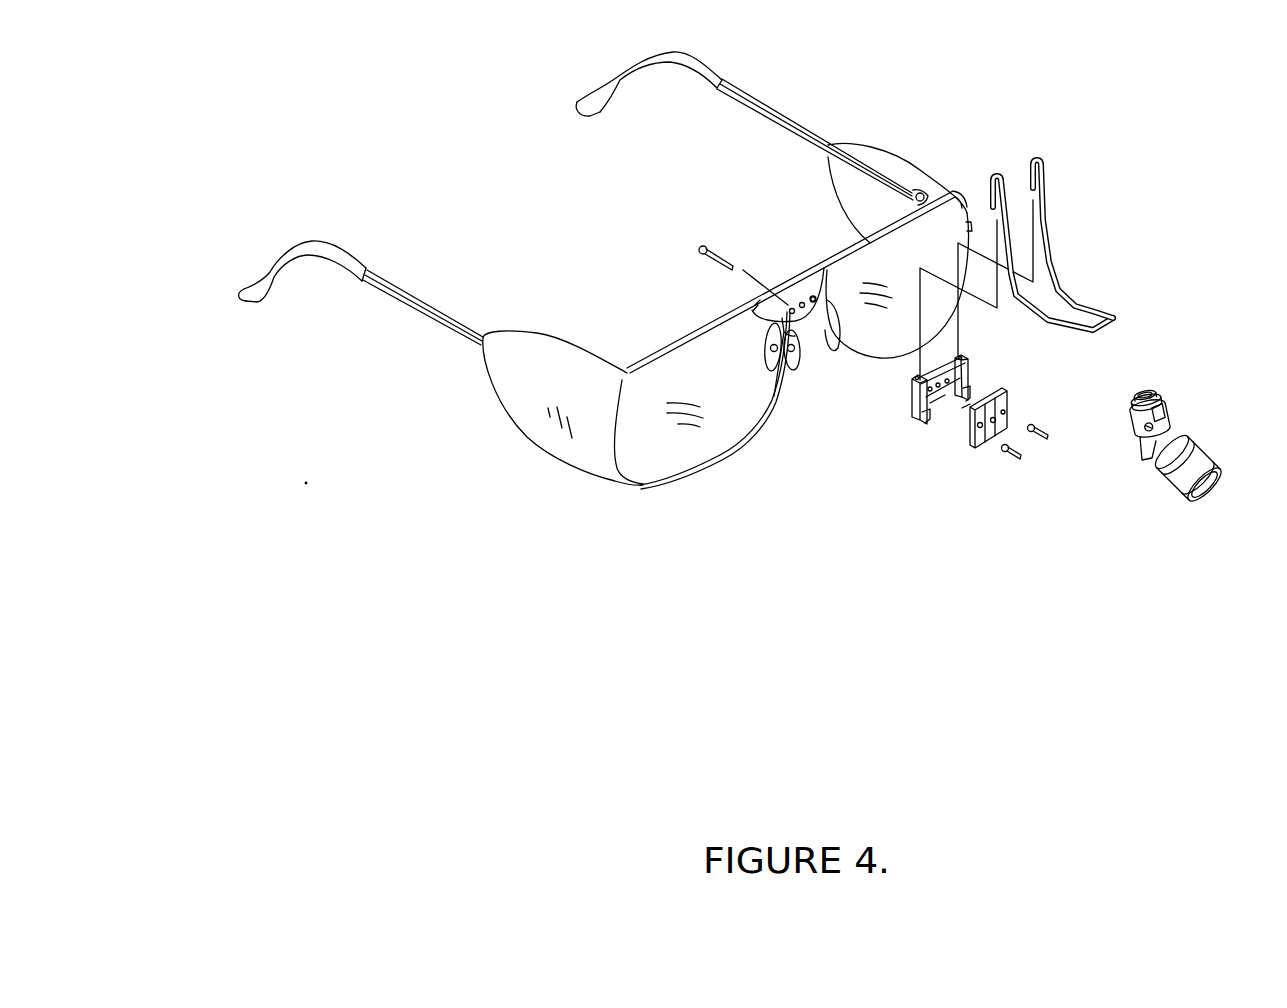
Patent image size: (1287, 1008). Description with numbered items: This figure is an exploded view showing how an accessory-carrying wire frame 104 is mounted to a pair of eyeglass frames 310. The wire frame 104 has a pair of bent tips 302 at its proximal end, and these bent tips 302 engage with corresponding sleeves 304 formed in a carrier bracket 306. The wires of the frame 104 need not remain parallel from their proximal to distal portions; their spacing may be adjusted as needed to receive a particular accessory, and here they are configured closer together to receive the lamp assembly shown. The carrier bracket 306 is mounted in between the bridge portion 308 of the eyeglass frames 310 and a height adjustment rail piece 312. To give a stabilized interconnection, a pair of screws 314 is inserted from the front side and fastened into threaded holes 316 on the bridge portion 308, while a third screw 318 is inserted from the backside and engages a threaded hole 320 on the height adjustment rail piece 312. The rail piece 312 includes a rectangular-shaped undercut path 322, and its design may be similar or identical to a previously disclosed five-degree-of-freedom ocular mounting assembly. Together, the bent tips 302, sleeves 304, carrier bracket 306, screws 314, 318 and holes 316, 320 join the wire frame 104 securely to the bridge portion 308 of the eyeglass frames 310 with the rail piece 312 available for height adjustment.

The wire frame 104 is at (1106, 225).
The bent tips 302 is at (1045, 158).
The sleeves 304 is at (933, 393).
The carrier bracket 306 is at (913, 423).
The bridge portion 308 is at (815, 296).
The eyeglass frames 310 is at (695, 337).
The height adjustment rail piece 312 is at (927, 475).
The screws 314 is at (1072, 447).
The threaded holes 316 is at (813, 297).
The third screw 318 is at (693, 250).
The threaded hole 320 is at (1003, 412).
The rectangular-shaped undercut path 322 is at (993, 440).